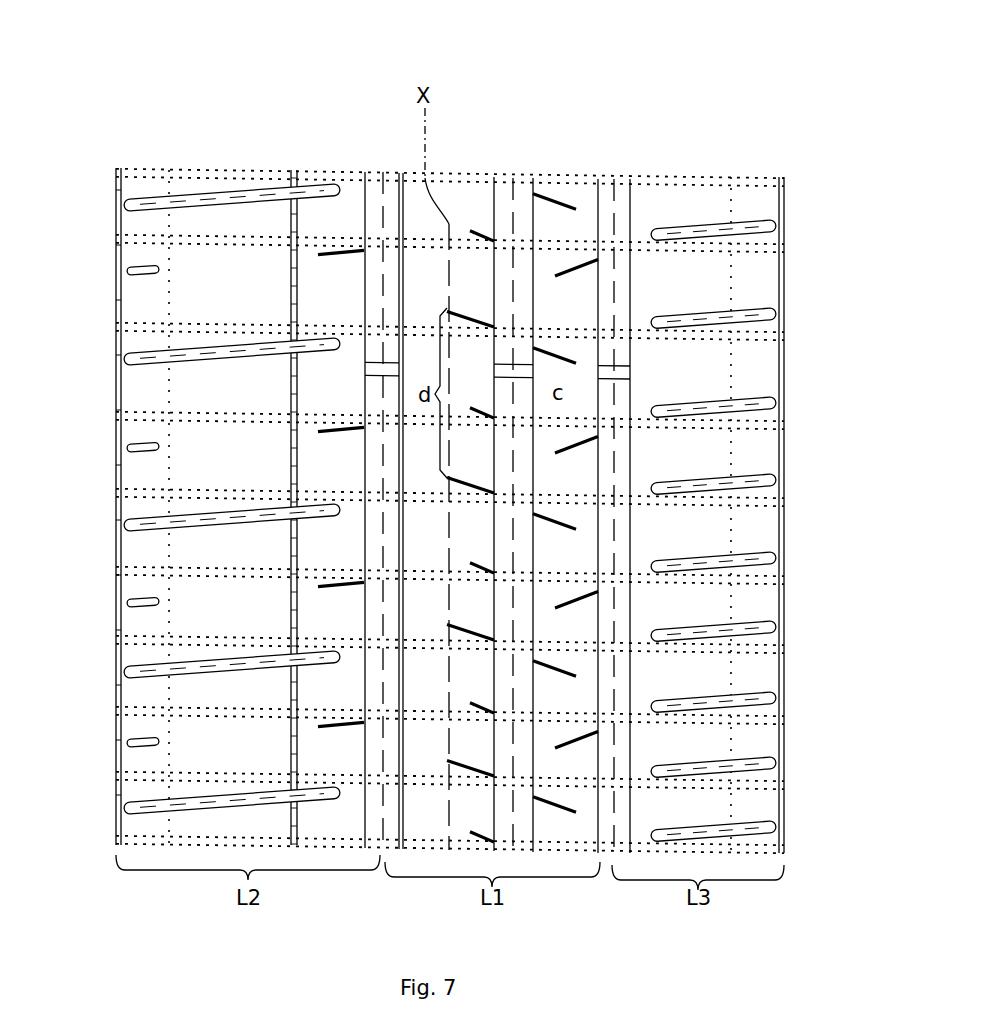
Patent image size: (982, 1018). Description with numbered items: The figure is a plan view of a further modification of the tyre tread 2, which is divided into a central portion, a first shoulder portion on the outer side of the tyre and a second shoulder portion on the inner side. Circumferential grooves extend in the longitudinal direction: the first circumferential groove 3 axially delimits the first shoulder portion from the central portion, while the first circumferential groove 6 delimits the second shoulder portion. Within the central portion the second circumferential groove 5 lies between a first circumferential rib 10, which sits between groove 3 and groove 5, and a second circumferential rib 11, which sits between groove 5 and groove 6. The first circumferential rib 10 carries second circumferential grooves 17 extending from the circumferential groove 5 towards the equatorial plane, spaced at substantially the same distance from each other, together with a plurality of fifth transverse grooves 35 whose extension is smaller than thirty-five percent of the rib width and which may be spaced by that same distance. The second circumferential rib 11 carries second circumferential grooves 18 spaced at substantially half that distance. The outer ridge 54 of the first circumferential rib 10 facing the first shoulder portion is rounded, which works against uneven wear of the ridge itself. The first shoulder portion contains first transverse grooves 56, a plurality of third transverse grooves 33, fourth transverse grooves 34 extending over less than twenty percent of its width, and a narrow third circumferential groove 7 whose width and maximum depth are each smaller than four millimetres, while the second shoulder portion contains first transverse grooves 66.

The tread 2 is at (803, 105).
The first circumferential groove 3 is at (380, 186).
The second circumferential groove 5 is at (522, 203).
The first circumferential groove 6 is at (618, 200).
The third circumferential groove 7 is at (293, 180).
The first circumferential rib 10 is at (472, 207).
The second circumferential rib 11 is at (588, 197).
The second circumferential grooves 17 is at (470, 314).
The second circumferential grooves 18 is at (555, 196).
The third transverse grooves 33 is at (143, 276).
The fourth transverse grooves 34 is at (355, 583).
The fifth transverse grooves 35 is at (474, 230).
The outer ridge 54 is at (402, 182).
The first transverse grooves 56 is at (172, 210).
The first transverse grooves 66 is at (747, 222).